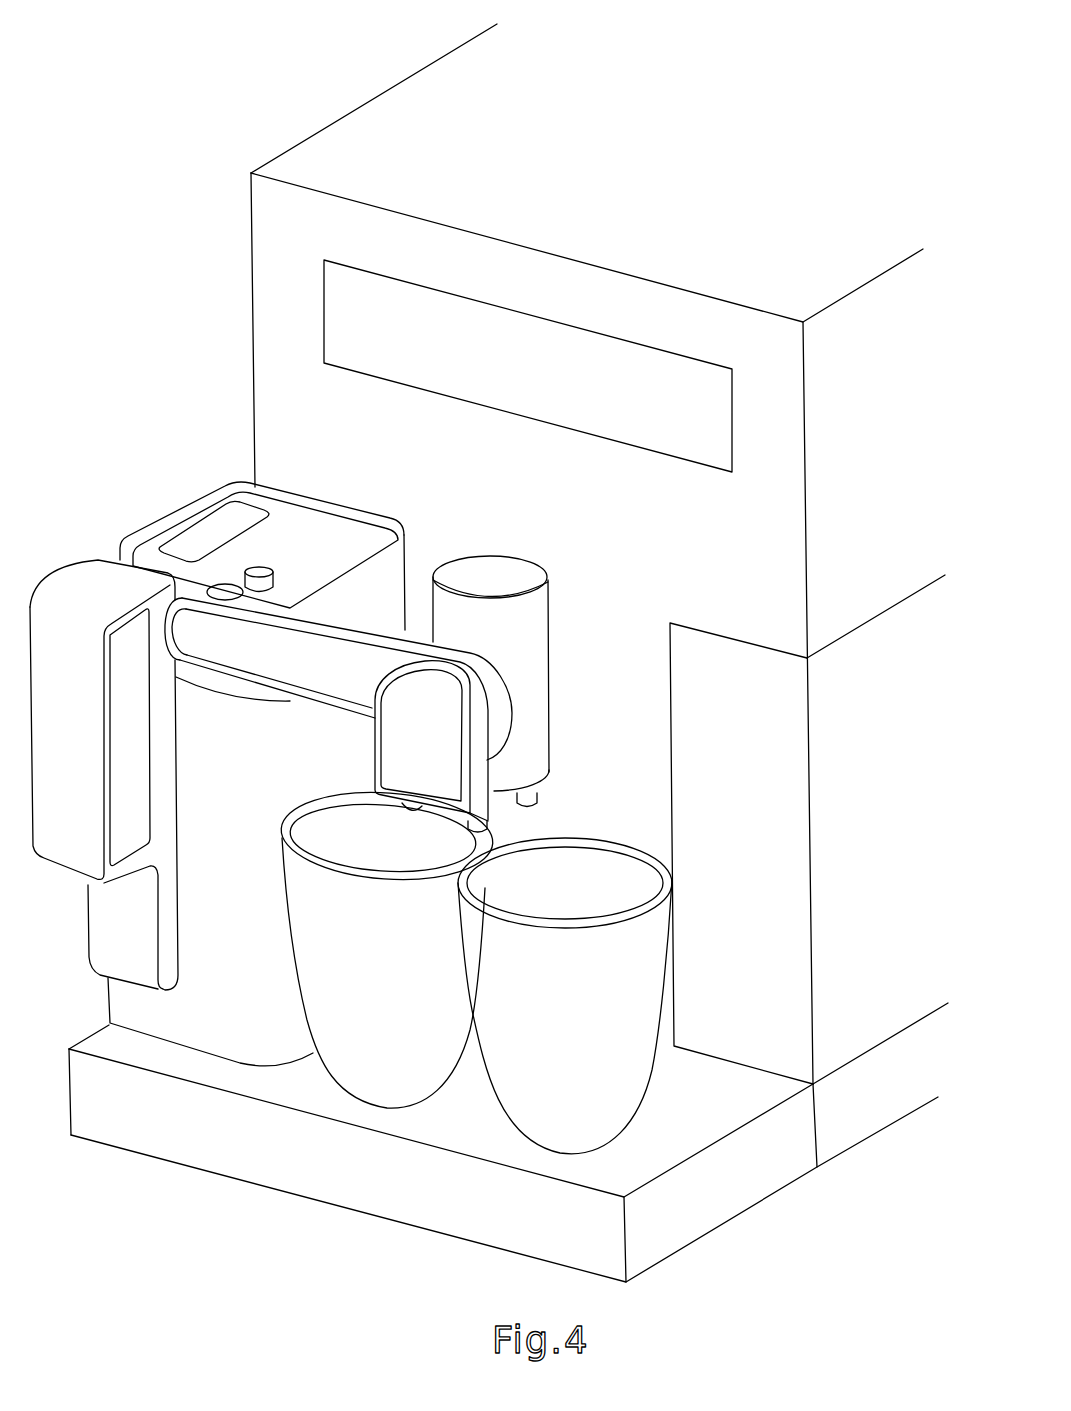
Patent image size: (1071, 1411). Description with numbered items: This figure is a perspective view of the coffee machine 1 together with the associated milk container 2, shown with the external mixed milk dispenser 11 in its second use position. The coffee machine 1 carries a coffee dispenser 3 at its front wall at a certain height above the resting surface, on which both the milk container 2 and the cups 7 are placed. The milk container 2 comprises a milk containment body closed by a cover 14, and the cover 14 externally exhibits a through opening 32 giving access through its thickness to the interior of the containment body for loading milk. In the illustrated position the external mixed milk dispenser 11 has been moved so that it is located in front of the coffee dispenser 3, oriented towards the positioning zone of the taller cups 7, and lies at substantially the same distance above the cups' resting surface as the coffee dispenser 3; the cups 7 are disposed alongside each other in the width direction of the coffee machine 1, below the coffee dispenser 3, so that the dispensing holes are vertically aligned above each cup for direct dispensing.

The coffee machine 1 is at (250, 158).
The milk container 2 is at (202, 1018).
The coffee dispenser 3 is at (533, 650).
The cups 7 is at (597, 987).
The external mixed milk dispenser 11 is at (488, 803).
The cover 14 is at (236, 485).
The through opening 32 is at (200, 515).